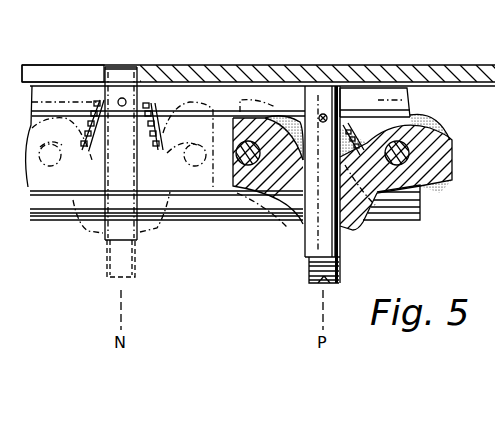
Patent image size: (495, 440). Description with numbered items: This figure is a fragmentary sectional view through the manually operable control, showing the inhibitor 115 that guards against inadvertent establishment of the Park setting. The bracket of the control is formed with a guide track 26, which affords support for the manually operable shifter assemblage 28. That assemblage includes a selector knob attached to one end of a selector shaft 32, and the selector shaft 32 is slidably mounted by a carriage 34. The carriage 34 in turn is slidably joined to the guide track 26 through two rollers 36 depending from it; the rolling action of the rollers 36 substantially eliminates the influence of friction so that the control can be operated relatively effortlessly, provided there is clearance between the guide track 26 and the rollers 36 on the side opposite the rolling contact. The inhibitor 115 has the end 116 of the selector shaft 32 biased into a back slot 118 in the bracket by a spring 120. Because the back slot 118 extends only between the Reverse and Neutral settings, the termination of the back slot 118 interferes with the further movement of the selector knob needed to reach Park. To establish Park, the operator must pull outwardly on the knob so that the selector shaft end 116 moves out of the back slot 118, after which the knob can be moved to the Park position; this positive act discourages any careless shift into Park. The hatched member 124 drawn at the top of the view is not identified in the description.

The back slot 118 is at (65, 80).
The inhibitor 115 is at (111, 60).
The end of the selector shaft 116 is at (128, 67).
The spring 120 is at (147, 105).
The top bar 124 is at (230, 62).
The rollers 36 is at (268, 100).
The selector shaft 32 is at (305, 233).
The carriage 34 is at (358, 228).
The guide track 26 is at (420, 220).
The shifter assemblage 28 is at (98, 239).